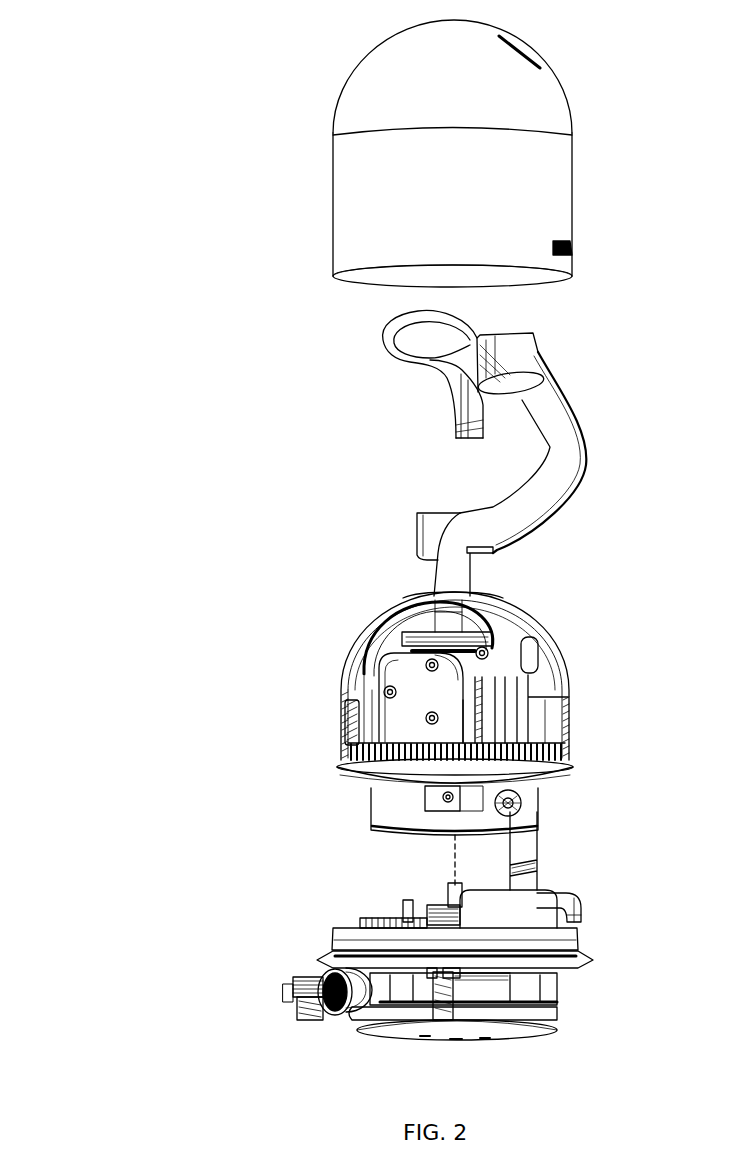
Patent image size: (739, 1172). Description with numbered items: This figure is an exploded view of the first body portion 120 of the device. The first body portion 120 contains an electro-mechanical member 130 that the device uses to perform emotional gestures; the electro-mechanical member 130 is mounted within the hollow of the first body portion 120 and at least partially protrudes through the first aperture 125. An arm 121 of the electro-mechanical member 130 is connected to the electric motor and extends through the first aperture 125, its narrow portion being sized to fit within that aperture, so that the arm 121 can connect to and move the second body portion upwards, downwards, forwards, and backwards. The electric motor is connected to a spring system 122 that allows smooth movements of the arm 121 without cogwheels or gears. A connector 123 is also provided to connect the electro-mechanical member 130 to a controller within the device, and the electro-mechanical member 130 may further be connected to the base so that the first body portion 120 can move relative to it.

The first body portion 120 is at (163, 128).
The arm 121 is at (578, 472).
The spring system 122 is at (388, 712).
The connector 123 is at (290, 973).
The first aperture 125 is at (540, 50).
The electro-mechanical member 130 is at (565, 654).